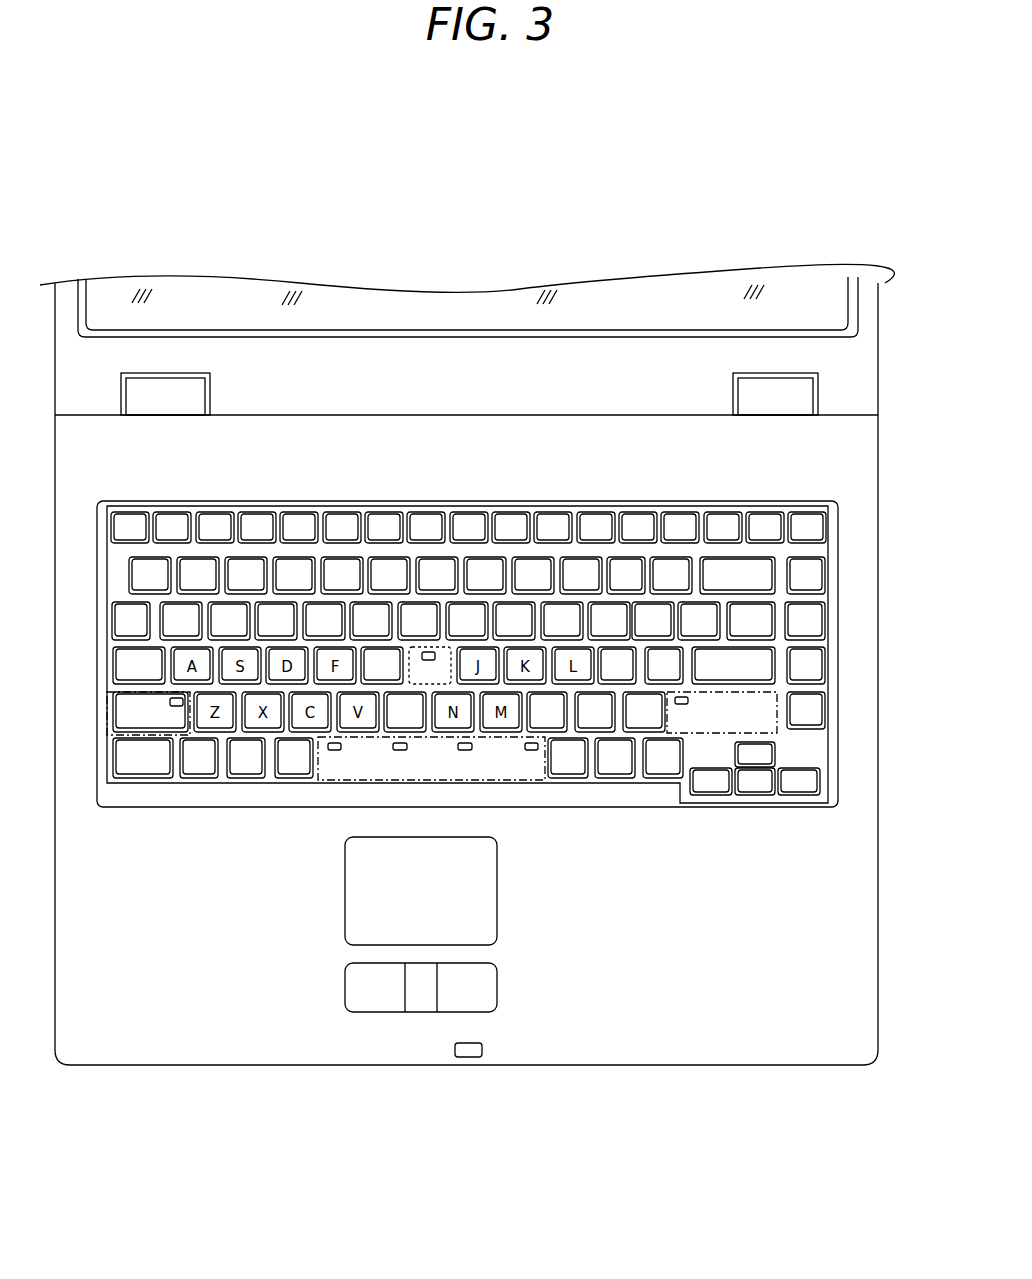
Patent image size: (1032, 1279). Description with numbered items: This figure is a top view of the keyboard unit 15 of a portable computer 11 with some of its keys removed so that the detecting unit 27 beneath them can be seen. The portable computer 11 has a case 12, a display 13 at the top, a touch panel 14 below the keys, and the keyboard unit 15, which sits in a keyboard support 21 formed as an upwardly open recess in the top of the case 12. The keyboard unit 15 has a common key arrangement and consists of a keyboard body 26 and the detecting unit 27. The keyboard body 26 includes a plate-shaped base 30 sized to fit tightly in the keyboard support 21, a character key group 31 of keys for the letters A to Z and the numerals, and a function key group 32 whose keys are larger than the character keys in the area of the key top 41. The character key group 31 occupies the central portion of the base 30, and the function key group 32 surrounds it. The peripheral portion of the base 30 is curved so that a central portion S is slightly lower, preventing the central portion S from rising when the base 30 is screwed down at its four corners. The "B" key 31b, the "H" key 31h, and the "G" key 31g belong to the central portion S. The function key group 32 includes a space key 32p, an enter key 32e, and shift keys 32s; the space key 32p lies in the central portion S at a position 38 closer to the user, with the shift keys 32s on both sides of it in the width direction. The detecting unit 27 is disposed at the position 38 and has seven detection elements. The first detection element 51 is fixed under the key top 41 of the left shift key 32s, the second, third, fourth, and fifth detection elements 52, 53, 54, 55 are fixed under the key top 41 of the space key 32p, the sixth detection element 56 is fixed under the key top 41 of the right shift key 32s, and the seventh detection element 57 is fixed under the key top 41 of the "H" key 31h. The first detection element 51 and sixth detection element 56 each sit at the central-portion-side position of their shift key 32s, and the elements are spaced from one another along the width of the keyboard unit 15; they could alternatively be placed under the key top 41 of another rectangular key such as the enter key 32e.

The portable computer 11 is at (441, 200).
The case 12 is at (710, 1047).
The display 13 is at (674, 292).
The touch panel 14 is at (482, 918).
The keyboard unit 15 is at (200, 882).
The keyboard support 21 is at (173, 784).
The keyboard body 26 is at (764, 797).
The detecting unit 27 is at (388, 752).
The base 30 is at (710, 755).
The character key group 31 is at (590, 582).
The "G" key 31g is at (370, 655).
The "B" key 31b is at (397, 695).
The "H" key 31h is at (440, 650).
The central portion S is at (435, 640).
The function key group 32 is at (120, 656).
The enter key 32e is at (758, 668).
The shift keys 32s is at (138, 727).
The space key 32p is at (520, 765).
The position 38 is at (497, 763).
The key top 41 is at (615, 607).
The first detection element 51 is at (170, 702).
The second detection element 52 is at (330, 757).
The third detection element 53 is at (400, 752).
The fourth detection element 54 is at (465, 752).
The fifth detection element 55 is at (537, 752).
The sixth detection element 56 is at (688, 701).
The seventh detection element 57 is at (433, 662).